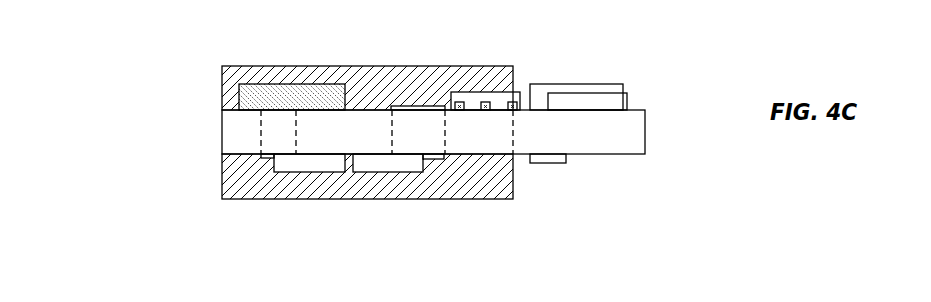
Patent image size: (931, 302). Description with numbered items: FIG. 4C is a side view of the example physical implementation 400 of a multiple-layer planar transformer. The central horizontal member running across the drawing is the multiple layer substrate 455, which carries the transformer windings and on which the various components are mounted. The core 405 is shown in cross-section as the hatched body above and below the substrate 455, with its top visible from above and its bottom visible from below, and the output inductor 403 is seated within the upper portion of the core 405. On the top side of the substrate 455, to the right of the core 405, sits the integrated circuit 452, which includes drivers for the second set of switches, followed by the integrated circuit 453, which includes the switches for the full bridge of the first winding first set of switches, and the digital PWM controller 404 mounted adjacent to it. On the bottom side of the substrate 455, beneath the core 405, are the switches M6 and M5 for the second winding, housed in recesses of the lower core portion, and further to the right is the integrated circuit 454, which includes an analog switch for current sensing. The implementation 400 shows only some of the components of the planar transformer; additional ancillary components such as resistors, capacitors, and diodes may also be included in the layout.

The physical implementation 400 is at (102, 128).
The output inductor 403 is at (253, 93).
The core 405 is at (345, 68).
The integrated circuit 452 is at (478, 100).
The integrated circuit 453 is at (573, 83).
The digital PWM controller 404 is at (618, 101).
The multiple layer substrate 455 is at (647, 143).
The integrated circuit 454 is at (550, 163).
The switch M6 is at (302, 173).
The switch M5 is at (383, 173).